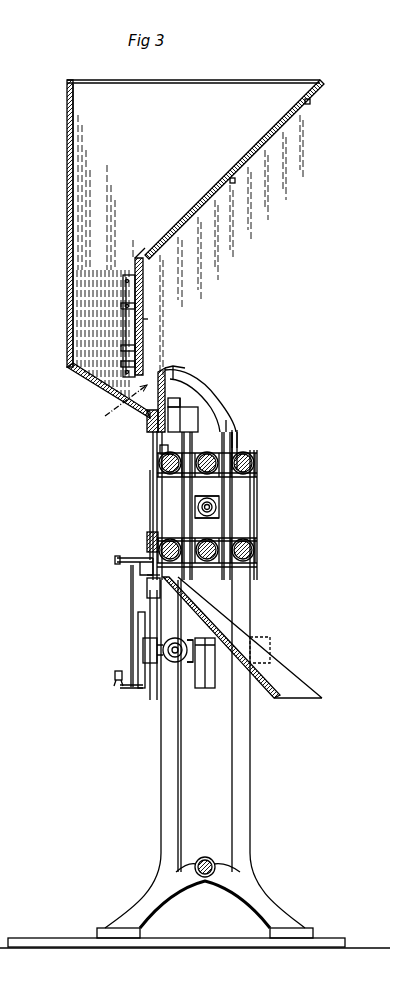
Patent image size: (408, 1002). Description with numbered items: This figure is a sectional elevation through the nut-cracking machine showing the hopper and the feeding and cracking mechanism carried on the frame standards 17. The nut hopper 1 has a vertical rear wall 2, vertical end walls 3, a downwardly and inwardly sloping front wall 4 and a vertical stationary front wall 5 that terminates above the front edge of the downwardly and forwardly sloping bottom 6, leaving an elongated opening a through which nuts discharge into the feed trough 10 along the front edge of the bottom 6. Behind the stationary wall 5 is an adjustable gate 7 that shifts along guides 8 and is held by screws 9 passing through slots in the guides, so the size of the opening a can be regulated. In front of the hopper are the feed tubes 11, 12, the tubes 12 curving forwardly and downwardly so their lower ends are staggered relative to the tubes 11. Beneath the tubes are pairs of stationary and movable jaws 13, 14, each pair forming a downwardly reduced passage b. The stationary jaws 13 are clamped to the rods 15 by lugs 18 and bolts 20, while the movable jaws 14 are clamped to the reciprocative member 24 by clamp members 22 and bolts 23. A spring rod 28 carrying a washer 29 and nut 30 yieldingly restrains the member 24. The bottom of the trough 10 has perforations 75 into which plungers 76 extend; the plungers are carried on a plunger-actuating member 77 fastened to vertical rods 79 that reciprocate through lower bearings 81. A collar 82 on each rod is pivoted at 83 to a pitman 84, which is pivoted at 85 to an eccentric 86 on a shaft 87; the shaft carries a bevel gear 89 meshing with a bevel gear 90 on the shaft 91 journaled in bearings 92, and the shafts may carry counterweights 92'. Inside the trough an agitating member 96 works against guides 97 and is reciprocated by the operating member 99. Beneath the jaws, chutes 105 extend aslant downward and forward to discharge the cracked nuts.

The nut hopper 1 is at (66, 129).
The vertical rear wall 2 is at (70, 181).
The vertical end walls 3 is at (237, 96).
The sloping front wall 4 is at (250, 158).
The vertical stationary front wall 5 is at (143, 273).
The bottom 6 is at (93, 384).
The gate 7 is at (135, 296).
The guides 8 is at (143, 363).
The screws 9 is at (163, 327).
The feed trough 10 is at (117, 409).
The feed tubes 11 is at (190, 419).
The feed tubes 12 is at (200, 394).
The stationary jaws 13 is at (236, 500).
The movable jaws 14 is at (150, 486).
The rods 15 is at (160, 462).
The frame standards 17 is at (160, 750).
The lugs 18 is at (257, 453).
The bolts 20 is at (257, 478).
The clamp member 22 is at (161, 449).
The bolts 23 is at (157, 477).
The reciprocative member 24 is at (240, 438).
The spring rod 28 is at (218, 507).
The washer 29 is at (212, 513).
The nut 30 is at (188, 495).
The perforations 75 is at (158, 412).
The plunger 76 is at (151, 493).
The plunger-actuating member 77 is at (146, 540).
The vertical rods 79 is at (137, 628).
The lower bearings 81 is at (146, 595).
The collar 82 is at (146, 579).
The pivot 83 is at (115, 560).
The pitman 84 is at (130, 650).
The pivot 85 is at (114, 677).
The eccentric 86 is at (149, 690).
The shafts 87 is at (270, 650).
The bevel gears 89 is at (190, 640).
The bevel gears 90 is at (172, 664).
The shaft 91 is at (174, 639).
The bearings 92 is at (153, 650).
The counterweights 92' is at (242, 684).
The agitating member 96 is at (186, 368).
The guides 97 is at (150, 433).
The operating member 99 is at (190, 385).
The chutes 105 is at (326, 690).
The elongated opening a is at (145, 320).
The downwardly reduced passage b is at (239, 440).